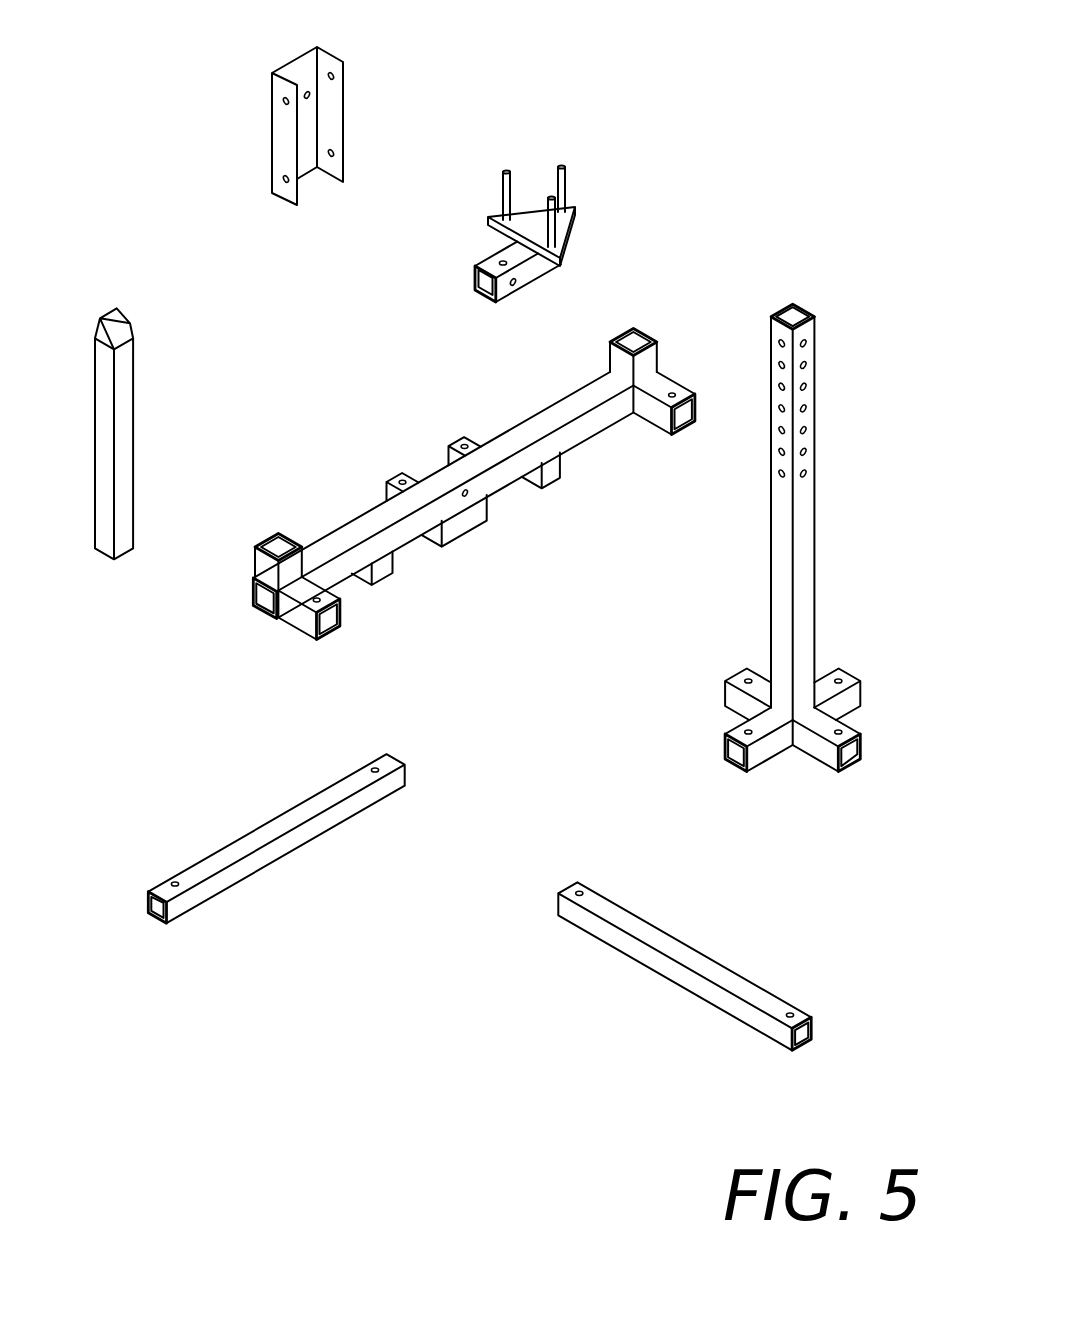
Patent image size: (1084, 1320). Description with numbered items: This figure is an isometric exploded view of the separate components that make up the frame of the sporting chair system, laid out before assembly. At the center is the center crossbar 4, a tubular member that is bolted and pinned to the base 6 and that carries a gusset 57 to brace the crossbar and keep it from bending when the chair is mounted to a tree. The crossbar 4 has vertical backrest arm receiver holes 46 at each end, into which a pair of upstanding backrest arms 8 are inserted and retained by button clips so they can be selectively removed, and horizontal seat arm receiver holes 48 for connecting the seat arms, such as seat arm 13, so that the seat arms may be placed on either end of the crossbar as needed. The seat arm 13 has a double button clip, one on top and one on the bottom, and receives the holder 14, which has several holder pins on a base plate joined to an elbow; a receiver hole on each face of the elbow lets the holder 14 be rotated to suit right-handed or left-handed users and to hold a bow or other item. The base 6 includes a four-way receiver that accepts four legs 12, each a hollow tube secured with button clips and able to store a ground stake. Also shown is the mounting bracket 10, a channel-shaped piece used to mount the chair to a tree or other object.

The center crossbar 4 is at (476, 447).
The base 6 is at (827, 352).
The backrest arm 8 is at (147, 408).
The mounting bracket 10 is at (385, 100).
The leg 12 is at (418, 745).
The seat arm 13 is at (730, 928).
The holder 14 is at (588, 195).
The backrest arm receiver hole 46 is at (626, 334).
The seat arm receiver hole 48 is at (683, 424).
The gusset 57 is at (477, 528).